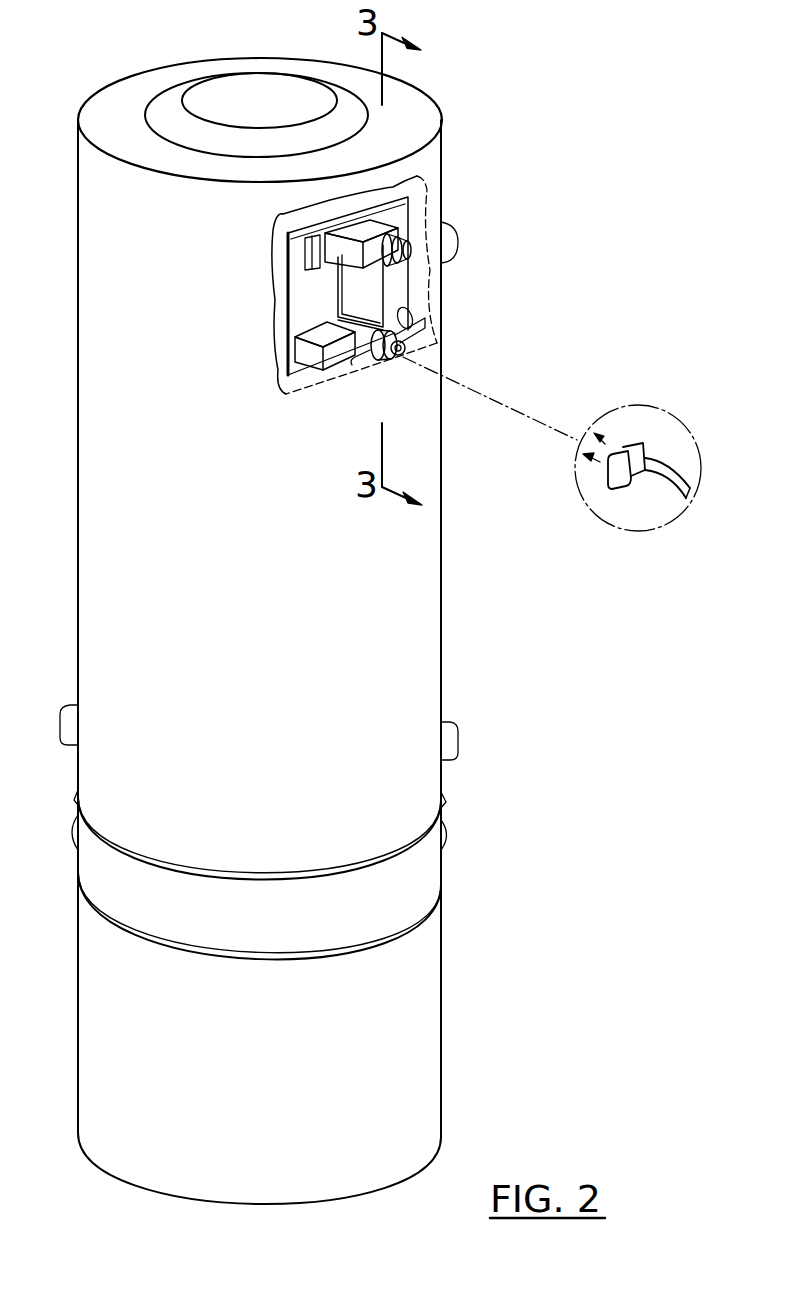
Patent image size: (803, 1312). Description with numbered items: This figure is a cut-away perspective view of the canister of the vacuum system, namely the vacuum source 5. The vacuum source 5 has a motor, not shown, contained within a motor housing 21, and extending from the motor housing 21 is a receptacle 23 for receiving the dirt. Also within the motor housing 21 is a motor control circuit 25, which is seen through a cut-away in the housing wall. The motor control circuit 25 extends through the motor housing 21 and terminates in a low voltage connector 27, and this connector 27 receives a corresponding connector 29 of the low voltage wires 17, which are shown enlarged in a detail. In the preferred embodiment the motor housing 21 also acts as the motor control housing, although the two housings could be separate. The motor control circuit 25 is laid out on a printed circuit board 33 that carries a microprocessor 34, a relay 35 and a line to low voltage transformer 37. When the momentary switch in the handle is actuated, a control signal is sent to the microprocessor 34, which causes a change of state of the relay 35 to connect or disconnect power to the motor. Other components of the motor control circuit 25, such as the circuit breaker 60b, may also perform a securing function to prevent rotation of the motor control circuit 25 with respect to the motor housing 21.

The vacuum source 5 is at (500, 98).
The low voltage wires 17 is at (662, 485).
The motor housing 21 is at (442, 505).
The receptacle 23 is at (443, 977).
The motor control circuit 25 is at (413, 245).
The low voltage connector 27 is at (402, 351).
The connector 29 is at (534, 236).
The printed circuit board 33 is at (298, 302).
The microprocessor 34 is at (405, 222).
The relay 35 is at (335, 353).
The line to low voltage transformer 37 is at (398, 288).
The circuit breaker 60b is at (325, 212).